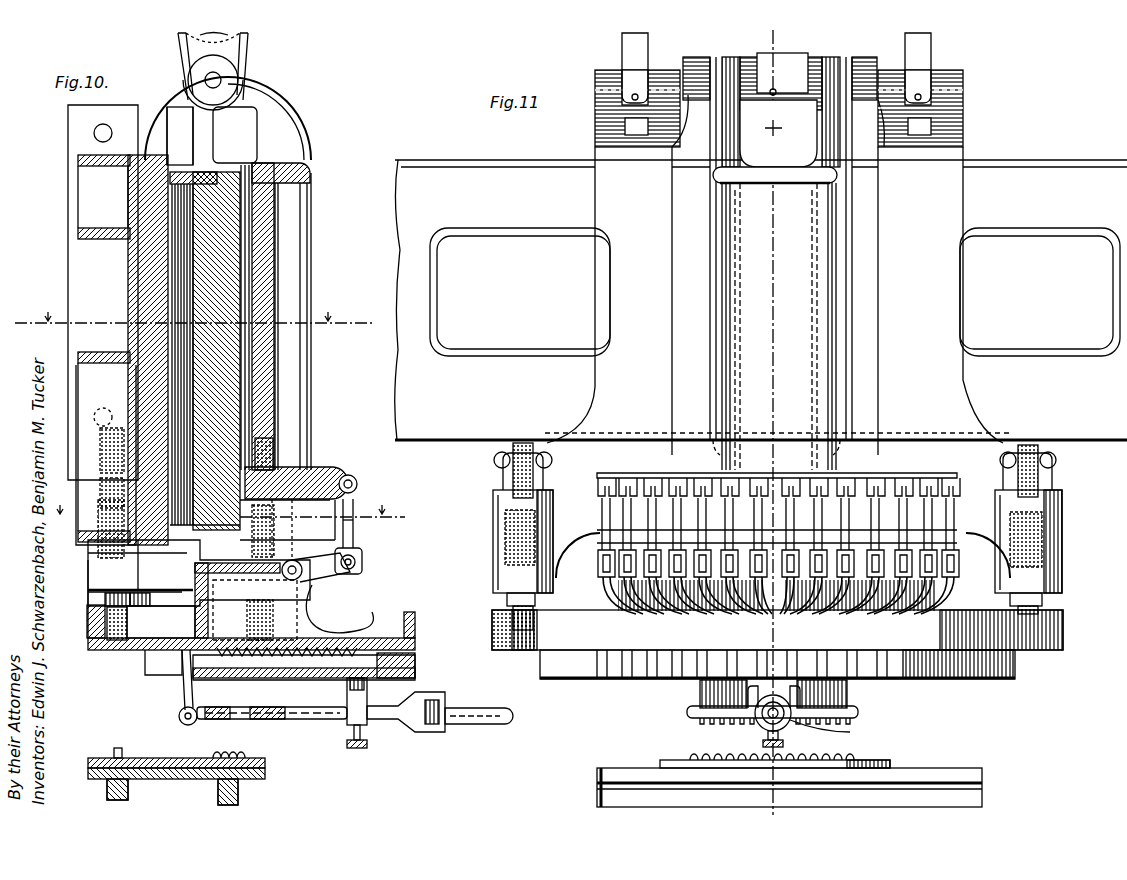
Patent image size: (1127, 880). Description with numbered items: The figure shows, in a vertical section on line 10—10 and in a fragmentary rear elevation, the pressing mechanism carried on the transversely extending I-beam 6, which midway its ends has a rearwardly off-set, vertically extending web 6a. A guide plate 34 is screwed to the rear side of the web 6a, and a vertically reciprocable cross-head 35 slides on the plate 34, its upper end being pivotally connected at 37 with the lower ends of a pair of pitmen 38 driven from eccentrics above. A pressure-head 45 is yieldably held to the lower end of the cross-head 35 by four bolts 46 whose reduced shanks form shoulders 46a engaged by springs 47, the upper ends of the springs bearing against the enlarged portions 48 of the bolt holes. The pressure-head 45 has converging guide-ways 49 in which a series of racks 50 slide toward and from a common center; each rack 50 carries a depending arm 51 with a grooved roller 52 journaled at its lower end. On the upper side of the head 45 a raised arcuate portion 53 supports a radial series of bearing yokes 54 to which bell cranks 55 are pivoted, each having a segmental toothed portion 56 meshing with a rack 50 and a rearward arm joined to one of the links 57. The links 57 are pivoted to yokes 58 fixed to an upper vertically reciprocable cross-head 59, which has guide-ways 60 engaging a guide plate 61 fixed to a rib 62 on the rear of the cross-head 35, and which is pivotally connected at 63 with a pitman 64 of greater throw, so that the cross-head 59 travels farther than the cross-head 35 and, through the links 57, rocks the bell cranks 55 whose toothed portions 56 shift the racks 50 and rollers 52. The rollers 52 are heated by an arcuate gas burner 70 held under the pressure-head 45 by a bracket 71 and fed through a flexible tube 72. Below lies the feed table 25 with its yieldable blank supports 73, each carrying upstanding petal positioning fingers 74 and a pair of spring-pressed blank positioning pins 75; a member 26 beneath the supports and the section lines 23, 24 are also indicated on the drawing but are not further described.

In FIG. 11, the I-beam 6 is at (1026, 176).
In FIG. 10, the web 6a is at (128, 283).
In FIG. 11, the section line 10 is at (784, 52).
In FIG. 10, the section line 23 is at (224, 510).
In FIG. 10, the section line 24 is at (195, 321).
In FIG. 11, the feed table 25 is at (611, 768).
In FIG. 10, the lower plate 26 is at (266, 778).
In FIG. 10, the guide plate 34 is at (150, 256).
In FIG. 10, the cross-head 35 is at (186, 120).
In FIG. 11, the cross-head 35 is at (620, 280).
In FIG. 10, the pivotal connection 37 is at (200, 93).
In FIG. 11, the pivotal connection 37 is at (610, 82).
In FIG. 10, the pitmen 38 is at (181, 56).
In FIG. 11, the pitmen 38 is at (647, 60).
In FIG. 10, the pressure-head 45 is at (412, 634).
In FIG. 11, the pressure-head 45 is at (777, 630).
In FIG. 10, the bolts 46 is at (104, 442).
In FIG. 11, the bolts 46 is at (528, 446).
In FIG. 10, the shoulders 46a is at (302, 560).
In FIG. 10, the springs 47 is at (356, 548).
In FIG. 10, the enlarged portions of the bolt holes 48 is at (356, 502).
In FIG. 11, the enlarged portions of the bolt holes 48 is at (505, 526).
In FIG. 10, the guide-ways 49 is at (415, 666).
In FIG. 11, the guide-ways 49 is at (650, 673).
In FIG. 10, the racks 50 is at (415, 643).
In FIG. 10, the depending arm 51 is at (184, 700).
In FIG. 11, the depending arm 51 is at (712, 700).
In FIG. 10, the grooved roller 52 is at (195, 722).
In FIG. 11, the grooved roller 52 is at (768, 741).
In FIG. 10, the raised arcuate portion 53 is at (161, 622).
In FIG. 10, the bearing yokes 54 is at (306, 576).
In FIG. 10, the bell cranks 55 is at (332, 600).
In FIG. 11, the bell cranks 55 is at (900, 594).
In FIG. 10, the segmental toothed portion 56 is at (380, 628).
In FIG. 10, the links 57 is at (362, 560).
In FIG. 11, the links 57 is at (624, 520).
In FIG. 10, the yokes 58 is at (342, 481).
In FIG. 11, the yokes 58 is at (618, 472).
In FIG. 10, the cross-head 59 is at (310, 379).
In FIG. 11, the cross-head 59 is at (758, 303).
In FIG. 10, the guide-ways 60 is at (252, 166).
In FIG. 10, the guide plate 61 is at (236, 268).
In FIG. 10, the rib 62 is at (212, 293).
In FIG. 10, the pivotal connection 63 is at (220, 80).
In FIG. 11, the pivotal connection 63 is at (800, 76).
In FIG. 10, the pitman 64 is at (230, 34).
In FIG. 11, the pitman 64 is at (768, 49).
In FIG. 10, the arcuate gas burner 70 is at (290, 722).
In FIG. 11, the arcuate gas burner 70 is at (693, 721).
In FIG. 10, the bracket 71 is at (368, 705).
In FIG. 11, the bracket 71 is at (790, 692).
In FIG. 10, the flexible tube 72 is at (480, 725).
In FIG. 11, the flexible tube 72 is at (798, 722).
In FIG. 10, the blank supports 73 is at (266, 764).
In FIG. 11, the blank supports 73 is at (680, 760).
In FIG. 10, the petal positioning fingers 74 is at (242, 756).
In FIG. 11, the petal positioning fingers 74 is at (856, 753).
In FIG. 10, the blank positioning pins 75 is at (122, 750).